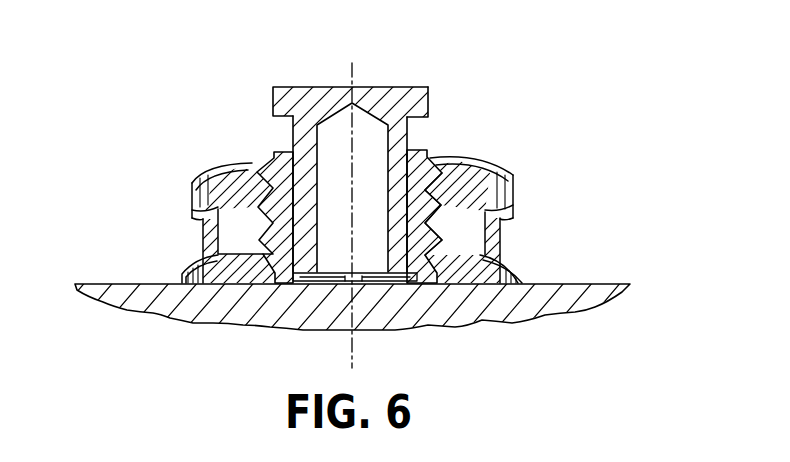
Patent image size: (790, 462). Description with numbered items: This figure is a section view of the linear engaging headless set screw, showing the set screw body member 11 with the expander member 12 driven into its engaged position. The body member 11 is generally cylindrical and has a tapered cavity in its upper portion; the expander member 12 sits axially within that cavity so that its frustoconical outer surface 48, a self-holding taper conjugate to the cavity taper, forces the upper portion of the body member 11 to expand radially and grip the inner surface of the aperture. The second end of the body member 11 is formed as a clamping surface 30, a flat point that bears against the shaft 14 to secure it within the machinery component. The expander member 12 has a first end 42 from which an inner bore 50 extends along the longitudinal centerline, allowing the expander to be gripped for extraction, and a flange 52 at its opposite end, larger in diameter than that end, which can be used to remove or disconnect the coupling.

The body member 11 is at (413, 205).
The expander member 12 is at (354, 153).
The shaft 14 is at (272, 105).
The clamping surface 30 is at (425, 255).
The first end 42 is at (314, 277).
The outer surface 48 is at (407, 133).
The inner bore 50 is at (426, 229).
The flange 52 is at (428, 90).